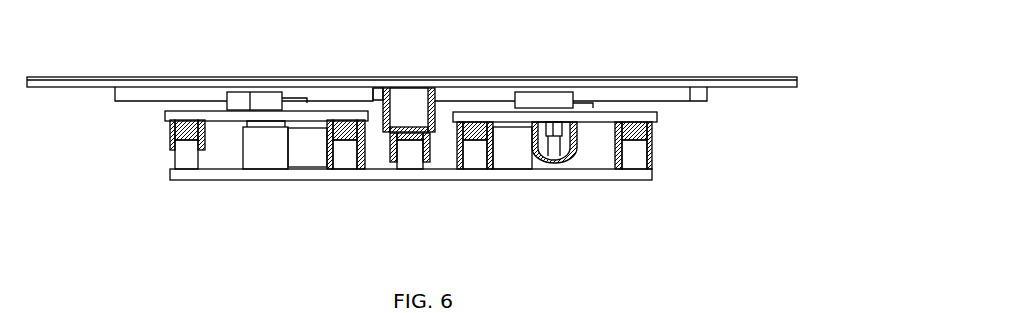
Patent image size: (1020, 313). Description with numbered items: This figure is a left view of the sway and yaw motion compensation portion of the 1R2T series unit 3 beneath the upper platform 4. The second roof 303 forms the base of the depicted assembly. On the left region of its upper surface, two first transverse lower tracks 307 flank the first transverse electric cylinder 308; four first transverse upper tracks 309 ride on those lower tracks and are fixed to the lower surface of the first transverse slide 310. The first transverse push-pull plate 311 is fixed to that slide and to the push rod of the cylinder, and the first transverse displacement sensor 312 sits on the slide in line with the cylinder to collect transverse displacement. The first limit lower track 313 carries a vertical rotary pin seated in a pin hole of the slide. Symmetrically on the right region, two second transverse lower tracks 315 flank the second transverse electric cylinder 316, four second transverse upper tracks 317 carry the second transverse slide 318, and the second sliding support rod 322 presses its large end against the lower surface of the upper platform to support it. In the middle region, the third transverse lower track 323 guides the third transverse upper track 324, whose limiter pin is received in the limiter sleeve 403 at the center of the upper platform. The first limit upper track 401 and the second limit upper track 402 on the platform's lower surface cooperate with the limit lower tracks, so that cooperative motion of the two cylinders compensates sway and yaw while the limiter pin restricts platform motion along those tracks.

The 1R2T series unit 3 is at (232, 175).
The upper platform 4 is at (742, 82).
The second roof 303 is at (305, 173).
The first transverse lower tracks 307 is at (635, 157).
The first transverse electric cylinder 308 is at (572, 161).
The first transverse upper tracks 309 is at (637, 128).
The first transverse slide 310 is at (633, 117).
The first transverse push-pull plate 311 is at (560, 153).
The first transverse displacement sensor 312 is at (553, 130).
The first limit lower track 313 is at (525, 100).
The second transverse lower tracks 315 is at (183, 157).
The second transverse electric cylinder 316 is at (267, 148).
The second transverse upper tracks 317 is at (183, 128).
The second transverse slide 318 is at (183, 117).
The second sliding support rod 322 is at (267, 99).
The third transverse lower track 323 is at (413, 162).
The third transverse upper track 324 is at (412, 135).
The first limit upper track 401 is at (617, 95).
The second limit upper track 402 is at (163, 93).
The limiter sleeve 403 is at (405, 100).